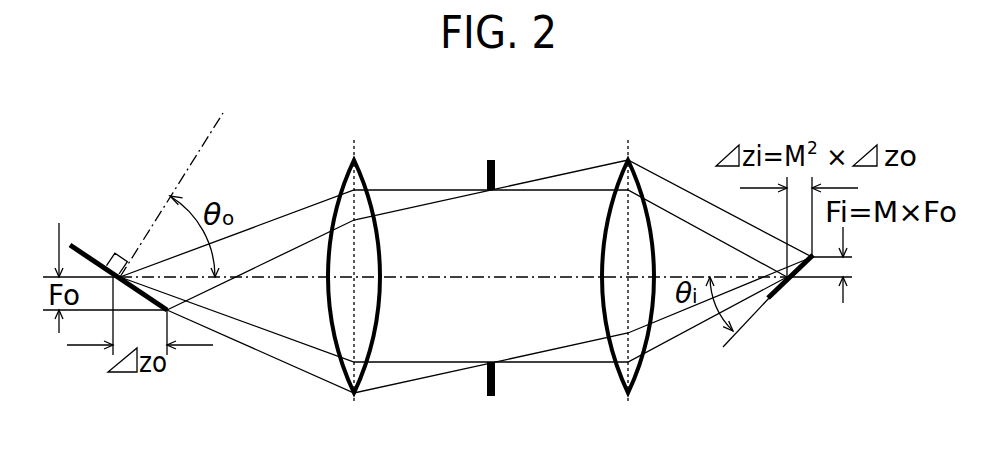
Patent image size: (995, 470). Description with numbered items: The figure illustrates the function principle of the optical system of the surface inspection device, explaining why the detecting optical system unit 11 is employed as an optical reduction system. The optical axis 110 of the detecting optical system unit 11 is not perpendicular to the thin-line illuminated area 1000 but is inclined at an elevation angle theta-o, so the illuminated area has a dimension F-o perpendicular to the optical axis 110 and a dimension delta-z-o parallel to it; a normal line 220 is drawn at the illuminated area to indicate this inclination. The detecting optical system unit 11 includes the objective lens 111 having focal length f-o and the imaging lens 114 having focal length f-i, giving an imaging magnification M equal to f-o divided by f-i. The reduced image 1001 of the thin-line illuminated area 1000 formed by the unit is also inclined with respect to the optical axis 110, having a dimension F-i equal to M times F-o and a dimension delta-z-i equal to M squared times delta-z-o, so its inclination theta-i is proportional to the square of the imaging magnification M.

The detecting optical system unit 11 is at (658, 157).
The optical axis 110 is at (491, 280).
The objective lens 111 is at (335, 372).
The imaging lens 114 is at (647, 372).
The normal line of object surface 220 is at (212, 137).
The thin-line illuminated area 1000 is at (90, 255).
The reduced image 1001 is at (778, 293).